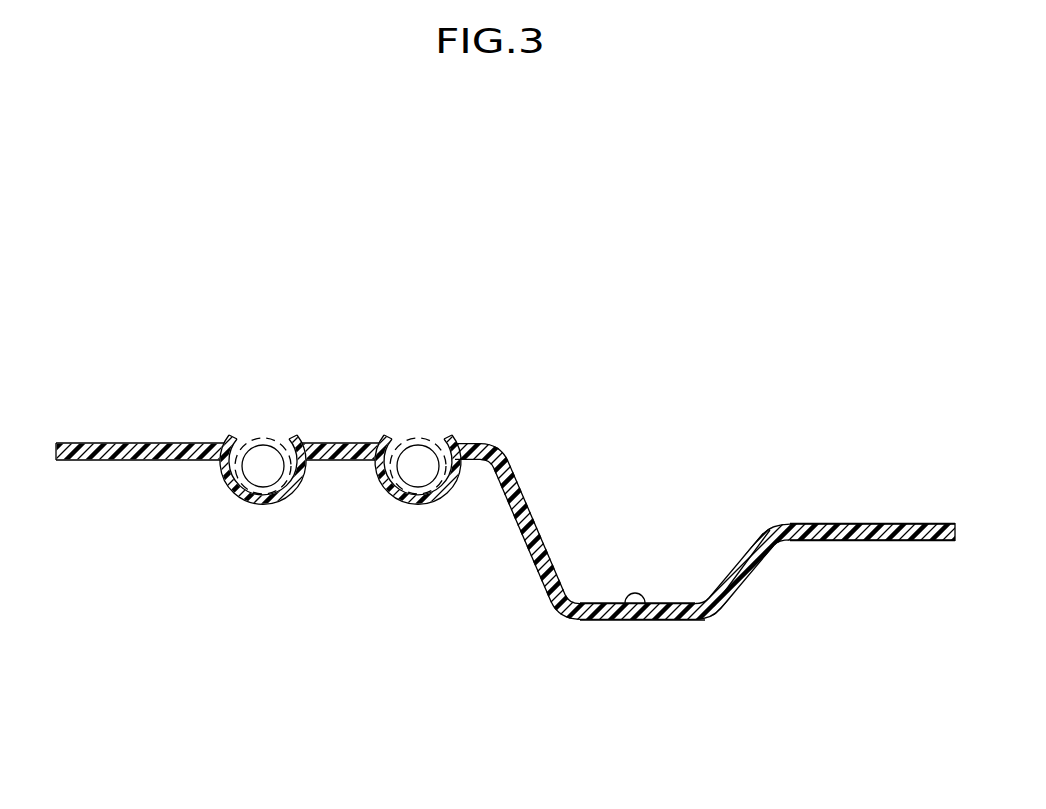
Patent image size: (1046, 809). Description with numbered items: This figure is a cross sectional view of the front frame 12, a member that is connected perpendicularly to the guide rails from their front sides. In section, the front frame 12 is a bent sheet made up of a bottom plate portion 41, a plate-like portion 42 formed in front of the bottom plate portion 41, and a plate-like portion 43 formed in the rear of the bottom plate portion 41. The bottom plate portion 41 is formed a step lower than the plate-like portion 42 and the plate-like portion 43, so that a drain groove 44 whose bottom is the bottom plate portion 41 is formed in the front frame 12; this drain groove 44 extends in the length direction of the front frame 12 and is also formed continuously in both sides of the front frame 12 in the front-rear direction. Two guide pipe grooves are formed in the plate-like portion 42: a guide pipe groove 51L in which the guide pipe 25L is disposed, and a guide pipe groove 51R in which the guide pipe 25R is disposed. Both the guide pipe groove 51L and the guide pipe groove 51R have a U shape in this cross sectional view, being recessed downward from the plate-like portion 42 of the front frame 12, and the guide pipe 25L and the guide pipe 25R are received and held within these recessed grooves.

The front frame 12 is at (737, 438).
The plate-like portion 42 is at (108, 443).
The plate-like portion 43 is at (896, 521).
The bottom plate portion 41 is at (668, 622).
The drain groove 44 is at (630, 597).
The guide pipe groove 51L is at (283, 443).
The guide pipe groove 51R is at (437, 437).
The guide pipe 25L is at (272, 490).
The guide pipe 25R is at (418, 490).